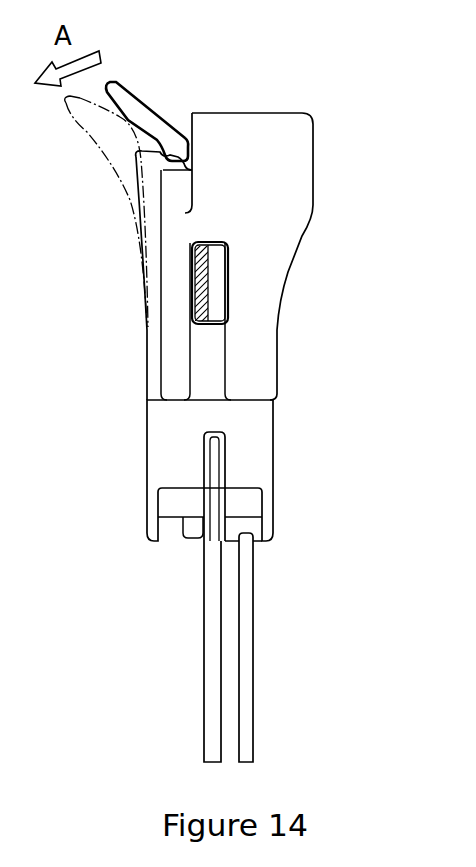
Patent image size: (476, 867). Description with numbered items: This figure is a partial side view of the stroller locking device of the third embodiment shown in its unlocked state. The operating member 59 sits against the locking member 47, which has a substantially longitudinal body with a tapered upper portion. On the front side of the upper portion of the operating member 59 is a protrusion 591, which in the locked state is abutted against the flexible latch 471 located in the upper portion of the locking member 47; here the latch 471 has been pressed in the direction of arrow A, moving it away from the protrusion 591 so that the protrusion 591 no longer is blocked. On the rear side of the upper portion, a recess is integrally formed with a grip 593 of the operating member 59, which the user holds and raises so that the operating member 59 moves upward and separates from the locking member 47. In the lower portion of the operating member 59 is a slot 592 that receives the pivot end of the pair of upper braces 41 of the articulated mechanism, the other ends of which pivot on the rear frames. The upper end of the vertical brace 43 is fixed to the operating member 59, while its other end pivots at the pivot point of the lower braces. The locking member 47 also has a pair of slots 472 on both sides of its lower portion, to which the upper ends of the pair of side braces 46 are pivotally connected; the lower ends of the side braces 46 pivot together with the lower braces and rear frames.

The upper braces 41 is at (217, 263).
The vertical brace 43 is at (248, 602).
The side braces 46 is at (206, 612).
The locking member 47 is at (278, 468).
The latch 471 is at (147, 120).
The slots 472 is at (207, 455).
The operating member 59 is at (280, 325).
The protrusion 591 is at (173, 167).
The slot 592 is at (222, 355).
The grip 593 is at (312, 114).